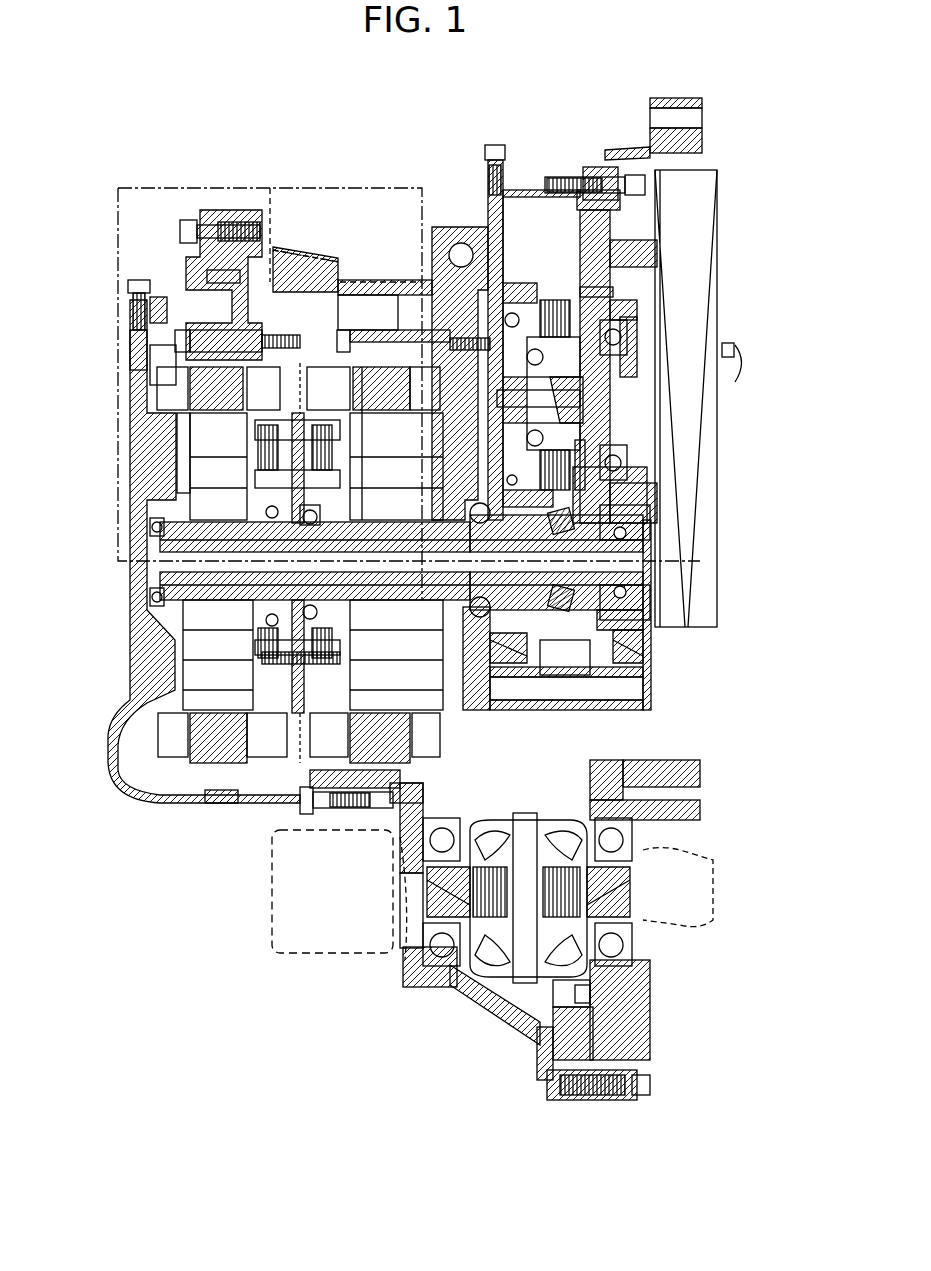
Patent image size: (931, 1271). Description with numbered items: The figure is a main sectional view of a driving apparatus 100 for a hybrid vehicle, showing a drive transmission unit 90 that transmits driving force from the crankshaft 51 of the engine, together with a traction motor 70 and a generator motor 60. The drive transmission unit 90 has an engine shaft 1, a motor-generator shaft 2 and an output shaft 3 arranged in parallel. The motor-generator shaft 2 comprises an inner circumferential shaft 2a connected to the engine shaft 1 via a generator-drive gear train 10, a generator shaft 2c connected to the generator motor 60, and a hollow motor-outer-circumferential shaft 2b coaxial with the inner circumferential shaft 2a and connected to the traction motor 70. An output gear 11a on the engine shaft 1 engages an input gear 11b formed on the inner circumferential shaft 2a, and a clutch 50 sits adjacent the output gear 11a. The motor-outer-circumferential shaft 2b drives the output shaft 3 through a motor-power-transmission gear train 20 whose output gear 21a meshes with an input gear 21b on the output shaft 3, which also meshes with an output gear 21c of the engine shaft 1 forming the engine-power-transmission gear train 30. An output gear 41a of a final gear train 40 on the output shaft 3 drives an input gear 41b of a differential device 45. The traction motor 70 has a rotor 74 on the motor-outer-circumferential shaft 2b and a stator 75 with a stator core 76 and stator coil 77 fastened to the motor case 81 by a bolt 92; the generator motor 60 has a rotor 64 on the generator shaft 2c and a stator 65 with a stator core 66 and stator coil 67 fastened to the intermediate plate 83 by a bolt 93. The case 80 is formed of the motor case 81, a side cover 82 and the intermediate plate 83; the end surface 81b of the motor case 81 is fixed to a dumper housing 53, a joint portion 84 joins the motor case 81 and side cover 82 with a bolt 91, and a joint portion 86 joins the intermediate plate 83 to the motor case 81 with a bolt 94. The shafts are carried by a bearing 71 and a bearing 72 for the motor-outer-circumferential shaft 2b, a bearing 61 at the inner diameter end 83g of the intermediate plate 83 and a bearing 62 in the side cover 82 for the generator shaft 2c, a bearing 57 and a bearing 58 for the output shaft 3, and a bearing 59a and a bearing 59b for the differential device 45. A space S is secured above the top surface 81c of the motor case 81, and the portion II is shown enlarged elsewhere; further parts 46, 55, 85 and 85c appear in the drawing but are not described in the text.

The engine shaft 1 is at (648, 400).
The motor-generator shaft 2 is at (648, 562).
The inner circumferential shaft 2a is at (222, 592).
The motor-outer-circumferential shaft 2b is at (372, 598).
The generator shaft 2c is at (420, 598).
The output shaft 3 is at (650, 702).
The generator-drive gear train 10 is at (692, 481).
The output gear 11a is at (612, 282).
The input gear 11b is at (652, 626).
The motor-power-transmission gear train 20 is at (648, 653).
The output gear 21a is at (647, 520).
The input gear 21b is at (540, 797).
The output gear 21c is at (522, 285).
The engine-power-transmission gear train 30 is at (577, 283).
The final gear train 40 is at (619, 865).
The output gear 41a is at (625, 660).
The input gear 41b is at (560, 1050).
The differential device 45 is at (485, 975).
The output member 46 is at (690, 870).
The clutch 50 is at (556, 290).
The crankshaft 51 is at (738, 368).
The dumper housing 53 is at (615, 160).
The parking gear 55 is at (720, 210).
The bearing 57 is at (628, 690).
The bearing 58 is at (455, 662).
The bearing 59a is at (622, 958).
The bearing 59b is at (442, 950).
The generator motor 60 is at (296, 238).
The bearing 61 is at (255, 500).
The bearing 62 is at (150, 515).
The rotor 64 is at (180, 427).
The stator 65 is at (92, 255).
The stator core 66 is at (172, 377).
The stator coil 67 is at (132, 350).
The traction motor 70 is at (422, 365).
The bearing 71 is at (457, 497).
The bearing 72 is at (322, 512).
The rotor 74 is at (635, 470).
The stator 75 is at (420, 148).
The stator core 76 is at (395, 317).
The stator coil 77 is at (368, 350).
The case 80 is at (220, 443).
The motor case 81 is at (270, 258).
The end surface 81b is at (600, 170).
The top surface 81c is at (300, 262).
The side cover 82 is at (128, 372).
The intermediate plate 83 is at (242, 258).
The inner diameter end 83g is at (268, 483).
The joint portion 84 is at (218, 205).
The support 85 is at (200, 255).
The pin 85c is at (205, 277).
The joint portion 86 is at (338, 824).
The drive transmission unit 90 is at (519, 168).
The bolt 91 is at (172, 232).
The bolt 92 is at (330, 380).
The bolt 93 is at (212, 362).
The bolt 94 is at (300, 805).
The driving apparatus 100 is at (225, 925).
The space S is at (334, 192).
The portion II is at (112, 552).